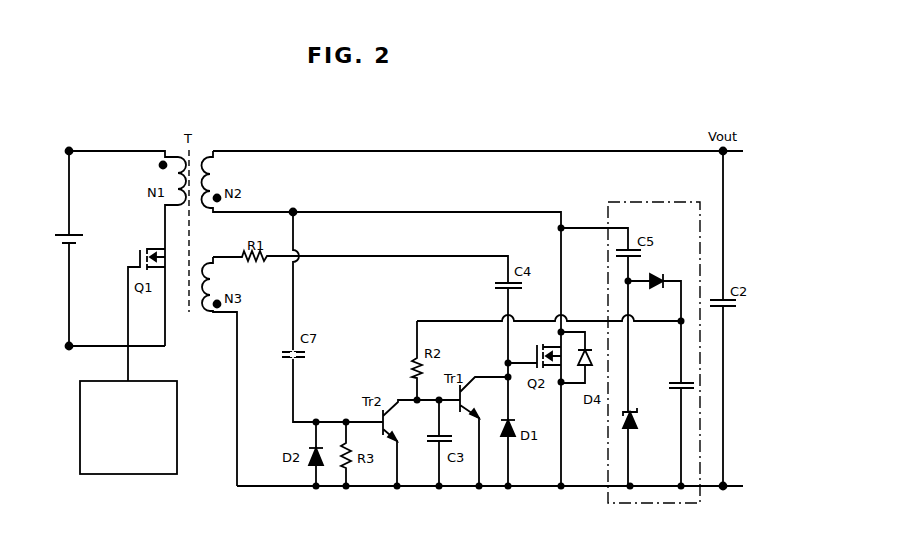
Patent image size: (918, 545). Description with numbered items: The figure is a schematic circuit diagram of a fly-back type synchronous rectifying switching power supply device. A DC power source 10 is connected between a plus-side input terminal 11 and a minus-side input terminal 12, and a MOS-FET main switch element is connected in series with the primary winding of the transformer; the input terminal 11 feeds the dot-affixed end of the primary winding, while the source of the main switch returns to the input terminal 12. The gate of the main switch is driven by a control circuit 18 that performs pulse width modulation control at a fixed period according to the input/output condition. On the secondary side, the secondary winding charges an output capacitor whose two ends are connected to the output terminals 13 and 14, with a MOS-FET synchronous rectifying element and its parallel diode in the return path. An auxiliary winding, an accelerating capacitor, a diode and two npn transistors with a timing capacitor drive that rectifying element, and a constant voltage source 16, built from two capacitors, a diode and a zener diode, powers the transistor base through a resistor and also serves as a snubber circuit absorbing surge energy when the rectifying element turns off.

The DC power source 10 is at (73, 234).
The input terminal 11 is at (68, 154).
The input terminal 12 is at (68, 345).
The output terminal 13 is at (725, 153).
The output terminal 14 is at (725, 484).
The constant voltage source 16 is at (633, 202).
The control circuit 18 is at (148, 381).